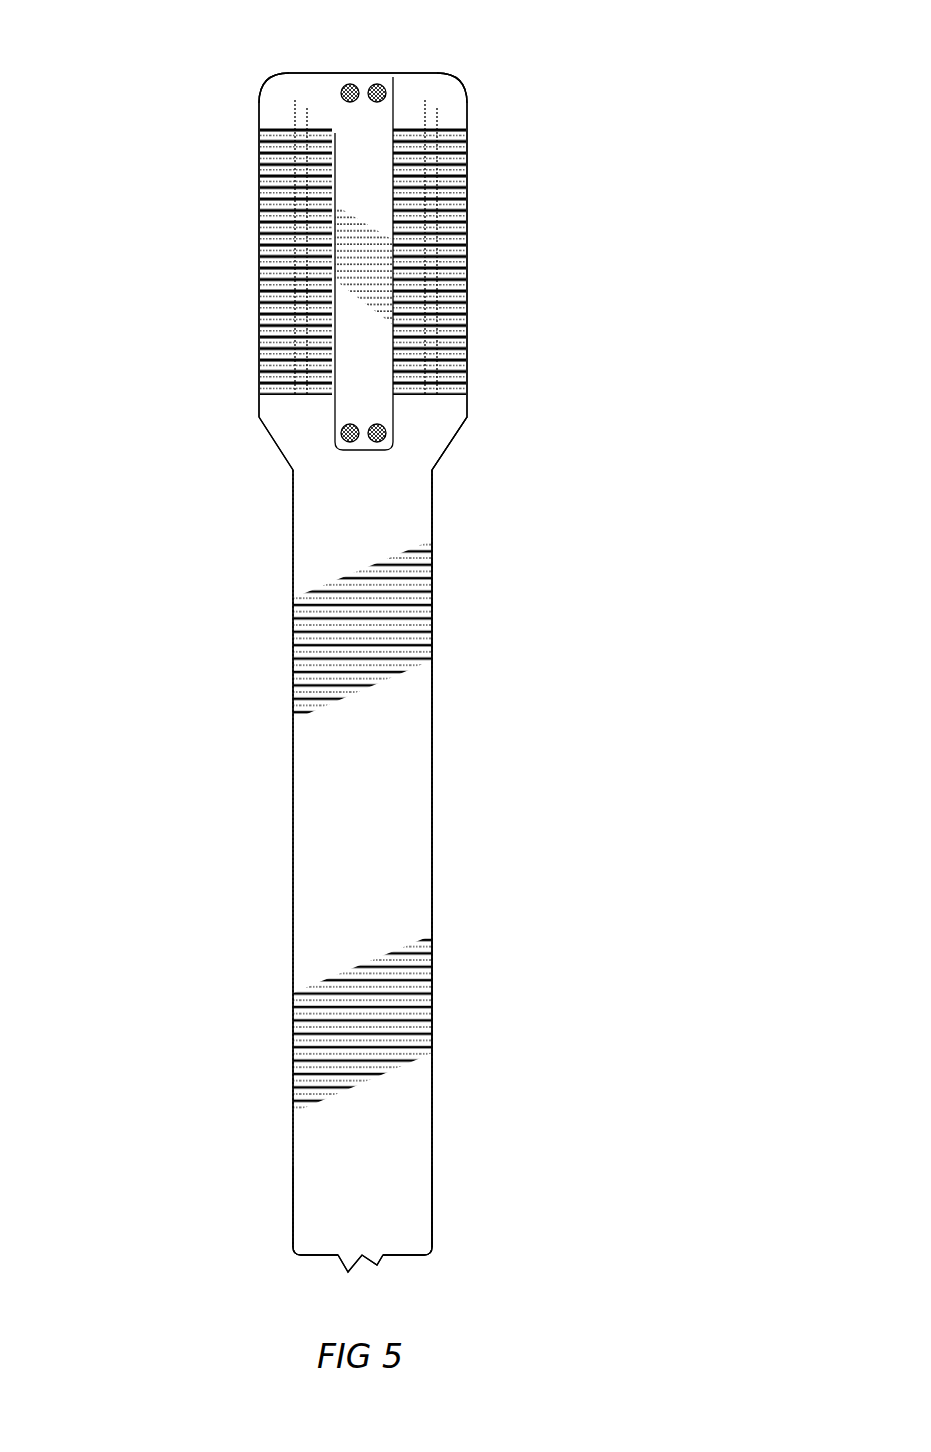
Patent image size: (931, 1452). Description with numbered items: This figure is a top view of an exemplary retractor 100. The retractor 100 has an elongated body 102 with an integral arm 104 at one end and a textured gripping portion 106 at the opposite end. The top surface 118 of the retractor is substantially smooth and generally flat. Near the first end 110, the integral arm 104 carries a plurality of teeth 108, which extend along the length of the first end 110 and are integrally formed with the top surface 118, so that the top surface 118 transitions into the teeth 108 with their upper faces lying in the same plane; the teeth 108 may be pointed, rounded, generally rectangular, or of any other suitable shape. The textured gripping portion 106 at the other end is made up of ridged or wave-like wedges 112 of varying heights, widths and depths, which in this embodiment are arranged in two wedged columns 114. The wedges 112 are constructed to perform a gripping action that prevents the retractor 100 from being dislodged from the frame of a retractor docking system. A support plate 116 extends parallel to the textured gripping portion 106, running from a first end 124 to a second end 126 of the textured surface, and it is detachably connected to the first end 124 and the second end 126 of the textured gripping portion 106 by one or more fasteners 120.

The retractor 100 is at (767, 70).
The elongated body 102 is at (227, 83).
The integral arm 104 is at (412, 912).
The textured gripping portion 106 is at (505, 83).
The plurality of teeth 108 is at (380, 1265).
The first end 110 is at (435, 1168).
The wedges 112 is at (432, 293).
The wedged columns 114 is at (282, 103).
The support plate 116 is at (375, 347).
The top surface 118 is at (412, 820).
The fasteners 120 is at (383, 443).
The first end 124 is at (351, 84).
The second end 126 is at (357, 448).